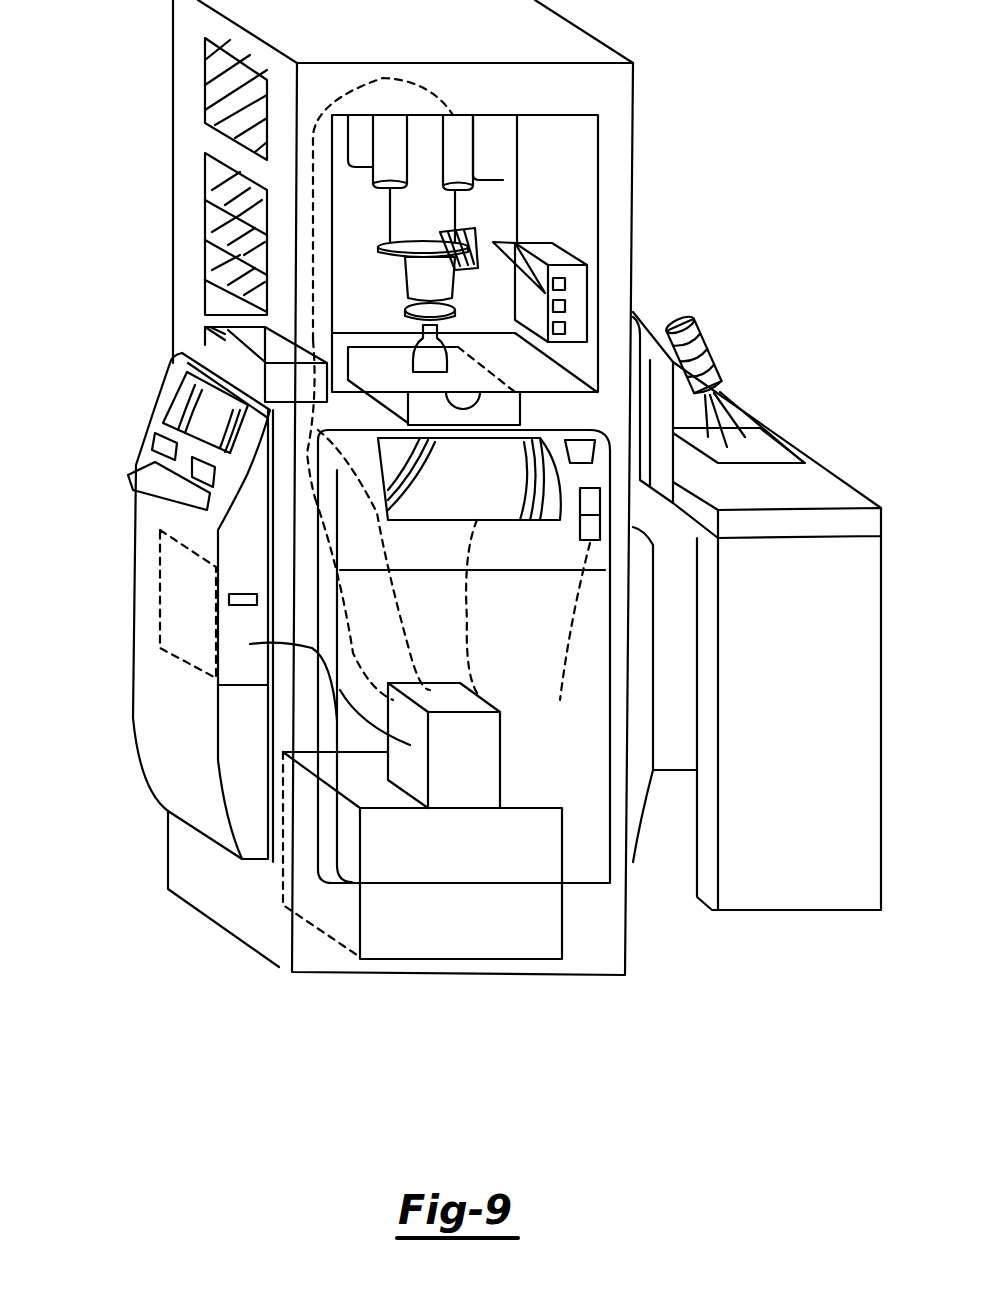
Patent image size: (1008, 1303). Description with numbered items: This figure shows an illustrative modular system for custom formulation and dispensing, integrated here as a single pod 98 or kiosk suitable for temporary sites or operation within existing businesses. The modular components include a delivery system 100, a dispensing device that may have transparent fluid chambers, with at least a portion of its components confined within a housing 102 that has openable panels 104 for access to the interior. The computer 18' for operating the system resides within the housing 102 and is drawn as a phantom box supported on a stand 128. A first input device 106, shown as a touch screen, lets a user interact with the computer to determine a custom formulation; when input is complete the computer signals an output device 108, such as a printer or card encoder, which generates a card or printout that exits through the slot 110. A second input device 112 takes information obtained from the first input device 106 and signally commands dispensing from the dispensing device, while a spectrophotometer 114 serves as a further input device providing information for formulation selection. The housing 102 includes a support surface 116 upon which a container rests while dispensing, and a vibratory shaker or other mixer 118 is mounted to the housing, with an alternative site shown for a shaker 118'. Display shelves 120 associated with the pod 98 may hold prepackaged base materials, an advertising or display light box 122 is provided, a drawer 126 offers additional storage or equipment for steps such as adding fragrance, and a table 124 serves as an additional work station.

The pod 98 is at (588, 1002).
The delivery system 100 is at (527, 180).
The housing 102 is at (325, 950).
The openable panels 104 is at (327, 862).
The first input device 106 is at (200, 428).
The output device 108 is at (165, 652).
The slot 110 is at (229, 598).
The second input device 112 is at (545, 507).
The spectrophotometer 114 is at (707, 340).
The support surface 116 is at (385, 357).
The mixer 118 is at (597, 281).
The shaker 118' is at (549, 341).
The display shelves 120 is at (205, 210).
The display light box 122 is at (210, 118).
The table 124 is at (815, 729).
The drawer 126 is at (210, 355).
The stand 128 is at (440, 940).
The computer 18' is at (537, 824).